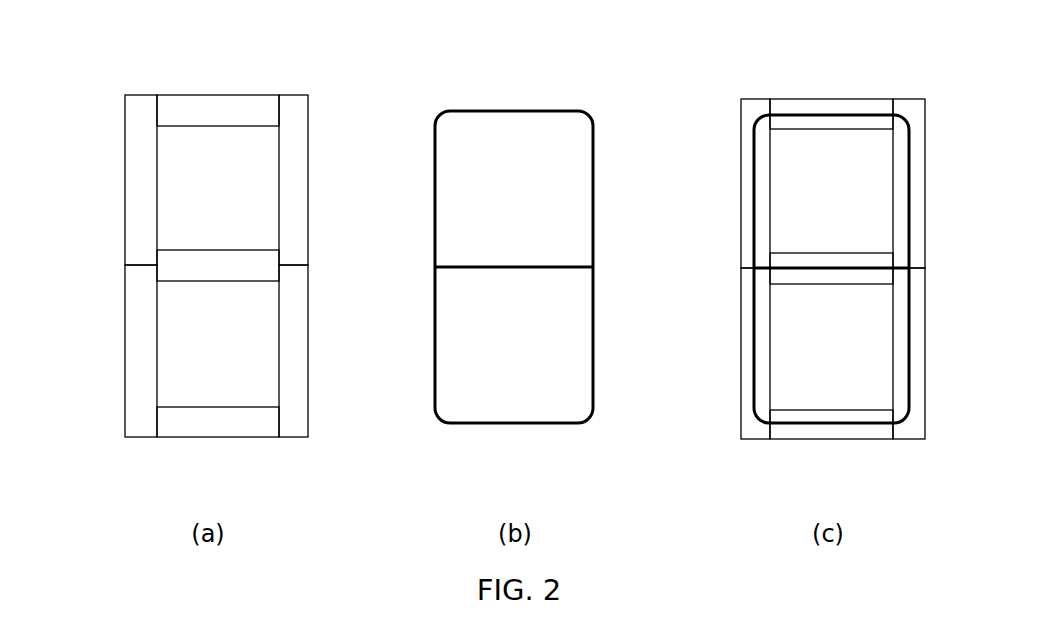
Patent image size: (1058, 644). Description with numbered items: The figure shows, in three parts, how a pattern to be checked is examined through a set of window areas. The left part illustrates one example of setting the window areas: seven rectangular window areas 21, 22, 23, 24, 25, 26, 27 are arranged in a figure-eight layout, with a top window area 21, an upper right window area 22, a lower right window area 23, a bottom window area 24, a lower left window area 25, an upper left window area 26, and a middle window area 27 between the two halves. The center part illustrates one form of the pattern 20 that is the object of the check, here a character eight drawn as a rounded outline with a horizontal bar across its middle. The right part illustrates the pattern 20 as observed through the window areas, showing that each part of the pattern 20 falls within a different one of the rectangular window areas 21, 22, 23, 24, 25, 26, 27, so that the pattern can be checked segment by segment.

The pattern 20 is at (510, 110).
The rectangular window area 21 is at (226, 98).
The rectangular window area 22 is at (303, 177).
The rectangular window area 23 is at (302, 354).
The rectangular window area 24 is at (224, 429).
The rectangular window area 25 is at (136, 354).
The rectangular window area 26 is at (136, 180).
The rectangular window area 27 is at (224, 277).